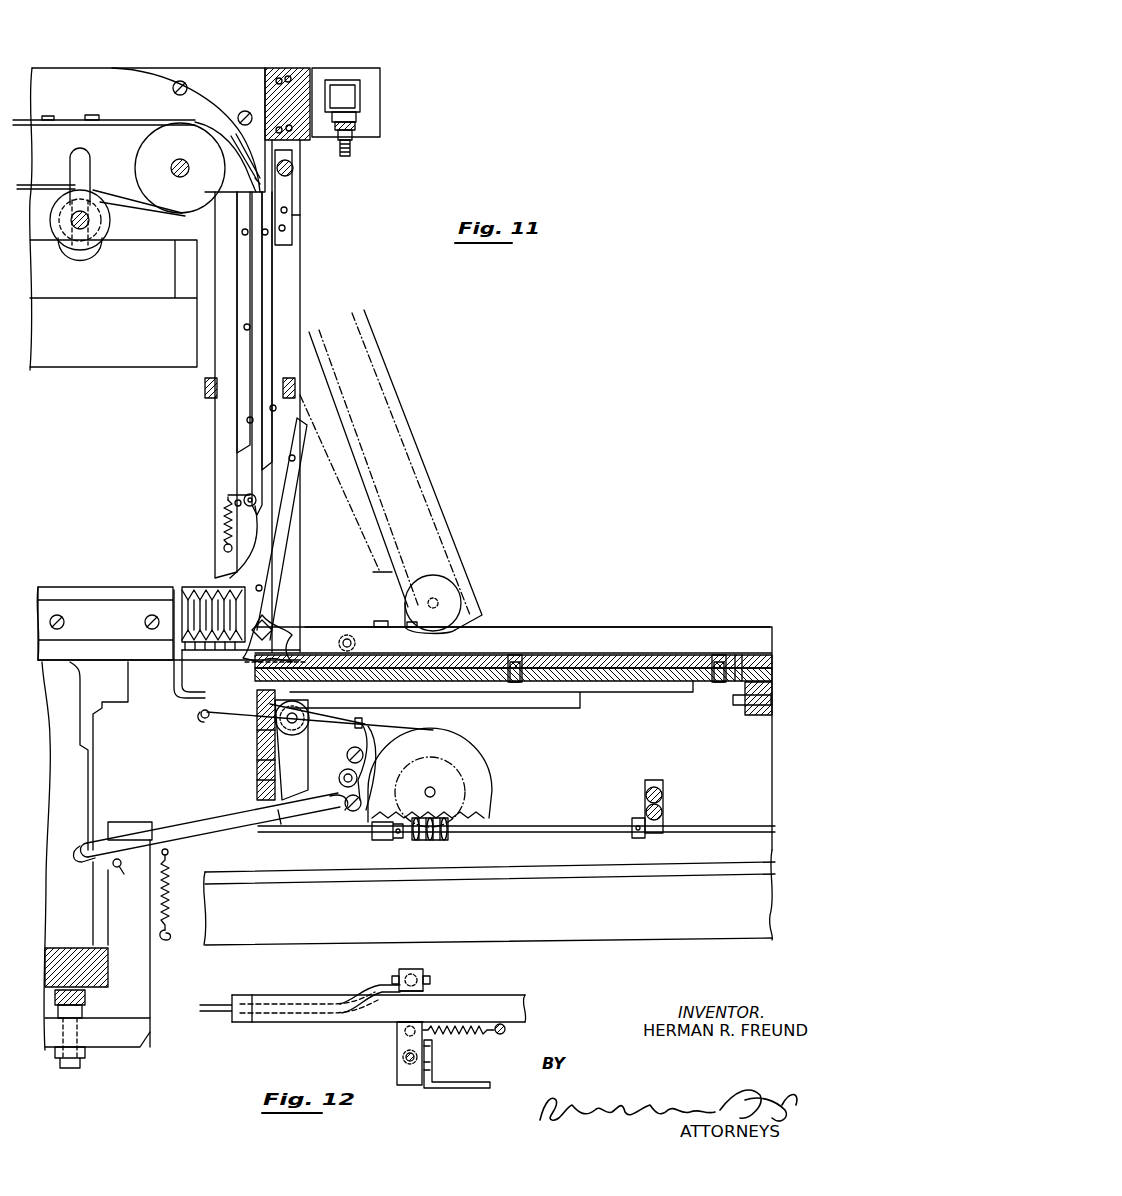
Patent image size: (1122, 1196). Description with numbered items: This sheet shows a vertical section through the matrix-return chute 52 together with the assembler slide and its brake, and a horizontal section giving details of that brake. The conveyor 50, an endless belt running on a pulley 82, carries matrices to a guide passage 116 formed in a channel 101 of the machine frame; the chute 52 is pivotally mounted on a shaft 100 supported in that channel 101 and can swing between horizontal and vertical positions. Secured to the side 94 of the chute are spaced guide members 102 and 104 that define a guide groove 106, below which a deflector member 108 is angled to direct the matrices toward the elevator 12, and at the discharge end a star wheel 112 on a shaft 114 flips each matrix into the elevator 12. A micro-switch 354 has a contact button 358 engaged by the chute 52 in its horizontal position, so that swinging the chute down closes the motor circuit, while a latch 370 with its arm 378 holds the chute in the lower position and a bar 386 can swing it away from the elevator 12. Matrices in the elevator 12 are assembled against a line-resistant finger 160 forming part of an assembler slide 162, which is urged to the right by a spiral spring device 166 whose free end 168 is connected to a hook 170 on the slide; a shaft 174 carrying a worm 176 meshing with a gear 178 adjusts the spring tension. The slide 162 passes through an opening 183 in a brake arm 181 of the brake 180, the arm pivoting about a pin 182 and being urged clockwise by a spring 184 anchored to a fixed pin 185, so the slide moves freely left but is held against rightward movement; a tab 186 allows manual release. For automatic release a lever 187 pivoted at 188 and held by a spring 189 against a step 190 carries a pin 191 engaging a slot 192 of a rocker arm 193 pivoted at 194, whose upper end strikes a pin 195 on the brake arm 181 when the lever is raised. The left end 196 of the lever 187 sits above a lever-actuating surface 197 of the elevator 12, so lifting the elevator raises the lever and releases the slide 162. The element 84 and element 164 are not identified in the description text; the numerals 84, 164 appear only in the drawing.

In FIG. 11, the elevator 12 is at (492, 660).
In FIG. 11, the conveyor 50 is at (145, 122).
In FIG. 11, the matrix-return chute 52 is at (215, 417).
In FIG. 11, the pulley 82 is at (142, 157).
In FIG. 11, the roller 84 is at (54, 220).
In FIG. 11, the side 94 is at (296, 268).
In FIG. 11, the shaft 100 is at (292, 172).
In FIG. 11, the channel 101 is at (98, 60).
In FIG. 11, the guide member 102 is at (248, 316).
In FIG. 11, the guide member 104 is at (270, 282).
In FIG. 11, the guide groove 106 is at (258, 298).
In FIG. 11, the deflector member 108 is at (285, 498).
In FIG. 11, the star wheel 112 is at (265, 628).
In FIG. 11, the shaft 114 is at (290, 630).
In FIG. 11, the guide passage 116 is at (212, 118).
In FIG. 11, the line-resistant finger 160 is at (176, 594).
In FIG. 12, the line-resistant finger 160 is at (236, 1022).
In FIG. 11, the assembler slide 162 is at (195, 702).
In FIG. 12, the assembler slide 162 is at (300, 1022).
In FIG. 11, the screw 164 is at (540, 662).
In FIG. 11, the spiral spring device 166 is at (472, 760).
In FIG. 11, the free end 168 is at (236, 715).
In FIG. 11, the hook 170 is at (202, 722).
In FIG. 11, the shaft 174 is at (585, 830).
In FIG. 11, the worm 176 is at (425, 838).
In FIG. 11, the gear 178 is at (440, 822).
In FIG. 12, the brake 180 is at (382, 1037).
In FIG. 12, the brake arm 181 is at (416, 974).
In FIG. 12, the pin 182 is at (404, 1058).
In FIG. 12, the opening 183 is at (420, 991).
In FIG. 12, the spring 184 is at (444, 1034).
In FIG. 12, the fixed pin 185 is at (500, 1034).
In FIG. 12, the tab 186 is at (464, 1088).
In FIG. 11, the lever 187 is at (208, 832).
In FIG. 12, the lever 187 is at (362, 990).
In FIG. 11, the pivot 188 is at (350, 812).
In FIG. 11, the spring 189 is at (172, 878).
In FIG. 11, the step 190 is at (118, 867).
In FIG. 11, the pin 191 is at (340, 782).
In FIG. 11, the slot 192 is at (348, 776).
In FIG. 11, the rocker arm 193 is at (360, 758).
In FIG. 11, the pivot 194 is at (368, 758).
In FIG. 11, the pin 195 is at (354, 728).
In FIG. 12, the pin 195 is at (412, 974).
In FIG. 11, the left end 196 is at (86, 848).
In FIG. 11, the lever-actuating surface 197 is at (98, 946).
In FIG. 11, the micro-switch 354 is at (336, 78).
In FIG. 11, the contact button 358 is at (354, 147).
In FIG. 11, the latch 370 is at (405, 620).
In FIG. 11, the arm 378 is at (325, 628).
In FIG. 11, the bar 386 is at (205, 388).